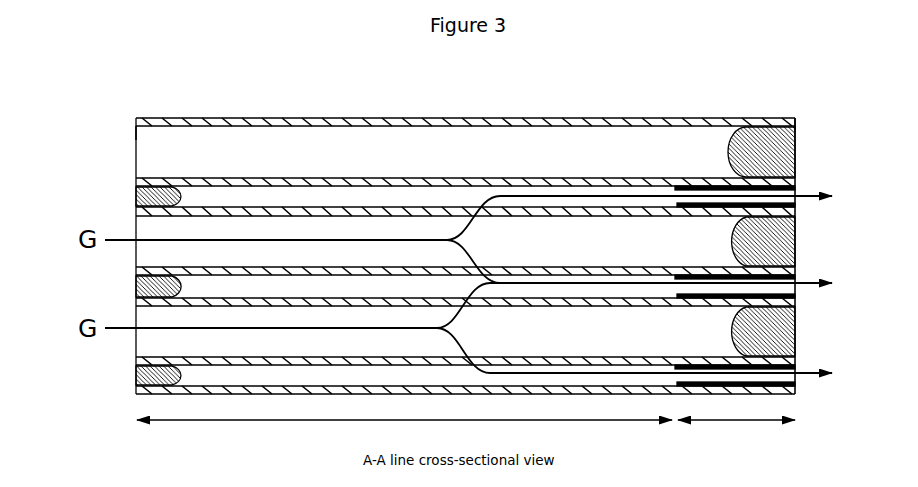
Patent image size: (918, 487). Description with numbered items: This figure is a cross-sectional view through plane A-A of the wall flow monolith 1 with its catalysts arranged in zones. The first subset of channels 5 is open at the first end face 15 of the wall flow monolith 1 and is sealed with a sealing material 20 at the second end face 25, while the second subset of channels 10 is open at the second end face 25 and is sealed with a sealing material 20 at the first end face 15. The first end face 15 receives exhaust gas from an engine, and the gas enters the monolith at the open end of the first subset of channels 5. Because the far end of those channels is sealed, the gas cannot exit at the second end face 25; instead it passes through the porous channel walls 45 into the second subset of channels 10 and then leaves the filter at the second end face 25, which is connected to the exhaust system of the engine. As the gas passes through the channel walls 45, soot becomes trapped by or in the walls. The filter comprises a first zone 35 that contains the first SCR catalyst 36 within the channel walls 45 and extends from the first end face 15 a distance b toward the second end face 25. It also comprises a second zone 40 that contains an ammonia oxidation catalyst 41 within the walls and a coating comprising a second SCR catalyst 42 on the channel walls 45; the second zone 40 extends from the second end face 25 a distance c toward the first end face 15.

The wall flow monolith 1 is at (352, 99).
The first subset of channels 5 is at (157, 147).
The second subset of channels 10 is at (790, 205).
The first end face 15 is at (119, 125).
The sealing material 20 is at (155, 197).
The second end face 25 is at (815, 126).
The first zone 35 is at (404, 421).
The first SCR catalyst 36 is at (563, 118).
The second zone 40 is at (736, 421).
The oxidation catalyst 41 is at (738, 120).
The second SCR catalyst 42 is at (796, 363).
The channel wall 45 is at (136, 390).